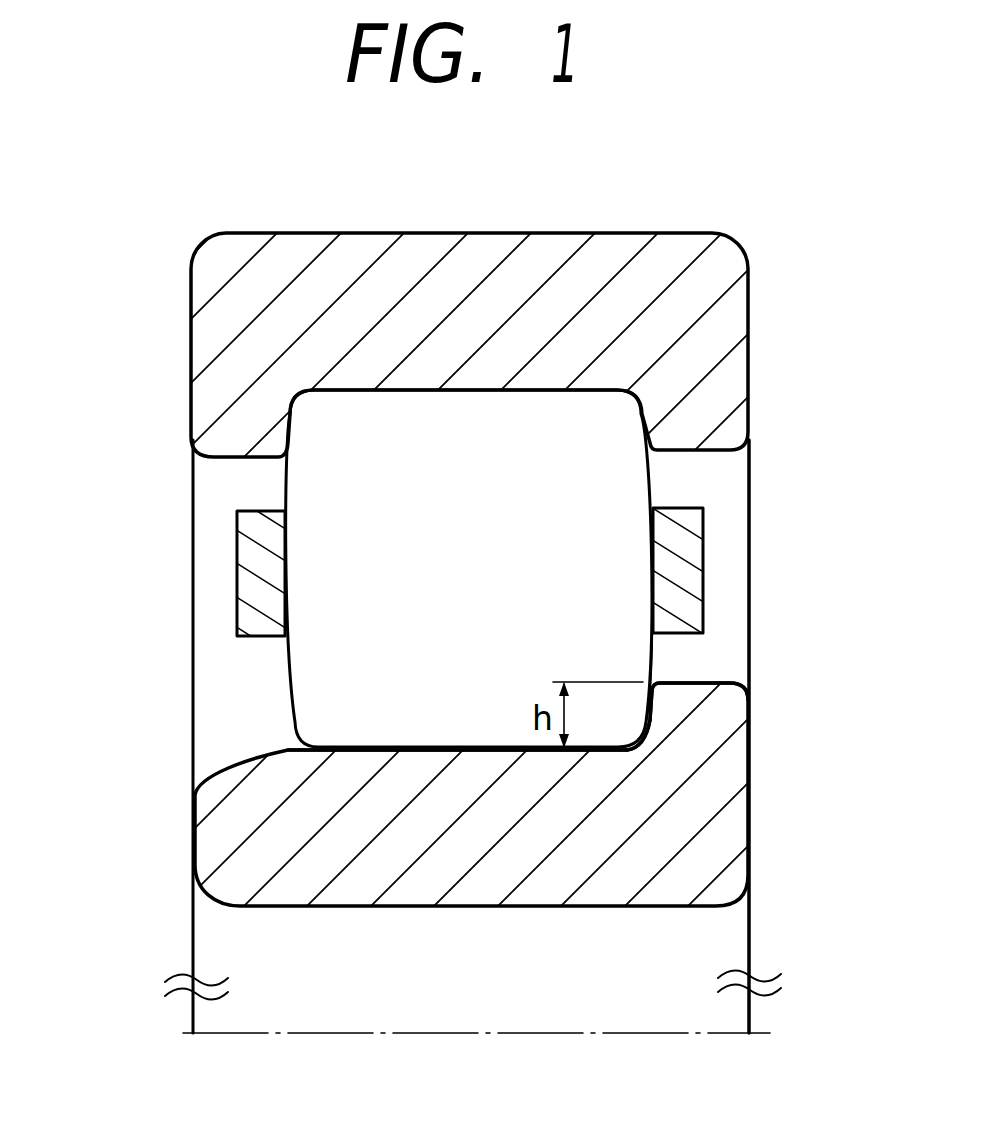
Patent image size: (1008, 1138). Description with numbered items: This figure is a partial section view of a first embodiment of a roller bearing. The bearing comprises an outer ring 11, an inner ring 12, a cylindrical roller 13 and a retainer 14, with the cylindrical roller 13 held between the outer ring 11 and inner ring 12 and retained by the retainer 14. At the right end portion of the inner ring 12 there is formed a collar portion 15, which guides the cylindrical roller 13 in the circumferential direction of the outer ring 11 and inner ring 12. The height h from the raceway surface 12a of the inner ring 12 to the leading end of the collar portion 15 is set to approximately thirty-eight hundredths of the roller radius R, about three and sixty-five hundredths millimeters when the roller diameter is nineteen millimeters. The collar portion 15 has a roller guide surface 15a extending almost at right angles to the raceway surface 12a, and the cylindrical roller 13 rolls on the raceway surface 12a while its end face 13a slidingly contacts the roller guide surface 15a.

The outer ring 11 is at (207, 357).
The inner ring 12 is at (215, 845).
The raceway surface 12a is at (430, 751).
The cylindrical roller 13 is at (303, 690).
The end face 13a is at (657, 655).
The retainer 14 is at (237, 558).
The collar portion 15 is at (730, 707).
The roller guide surface 15a is at (650, 693).